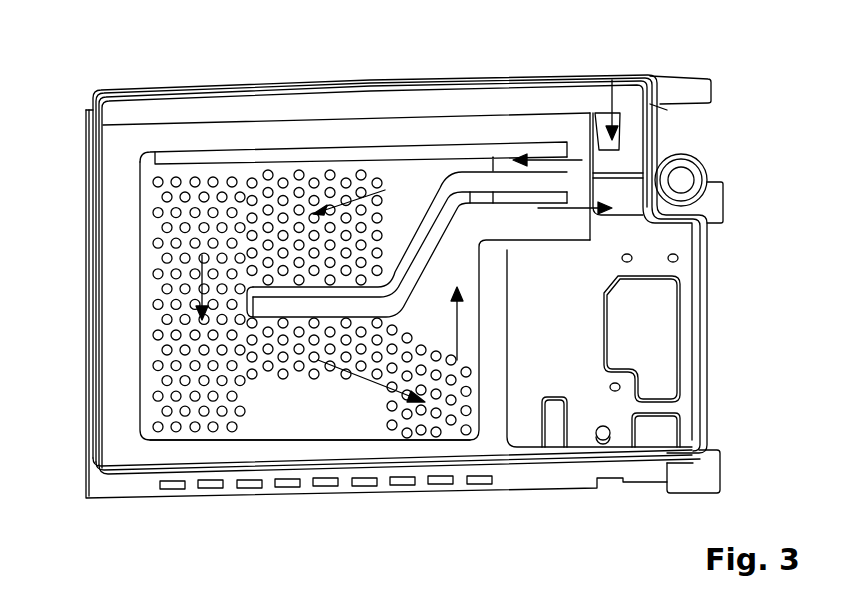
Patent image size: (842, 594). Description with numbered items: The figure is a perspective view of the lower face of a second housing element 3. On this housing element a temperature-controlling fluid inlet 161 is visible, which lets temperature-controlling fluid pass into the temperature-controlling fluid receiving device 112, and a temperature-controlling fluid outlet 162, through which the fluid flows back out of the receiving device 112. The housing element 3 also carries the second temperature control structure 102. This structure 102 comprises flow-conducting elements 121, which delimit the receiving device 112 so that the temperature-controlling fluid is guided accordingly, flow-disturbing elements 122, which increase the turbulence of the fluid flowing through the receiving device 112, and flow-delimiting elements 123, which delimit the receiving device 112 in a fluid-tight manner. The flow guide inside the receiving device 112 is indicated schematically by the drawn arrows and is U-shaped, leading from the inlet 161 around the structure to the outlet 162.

The second housing element 3 is at (757, 63).
The second temperature control structure 102 is at (180, 442).
The temperature-controlling fluid receiving device 112 is at (261, 422).
The flow-conducting elements 121 is at (353, 293).
The flow-disturbing elements 122 is at (175, 302).
The flow-delimiting elements 123 is at (195, 167).
The temperature-controlling fluid inlet 161 is at (618, 130).
The temperature-controlling fluid outlet 162 is at (676, 185).